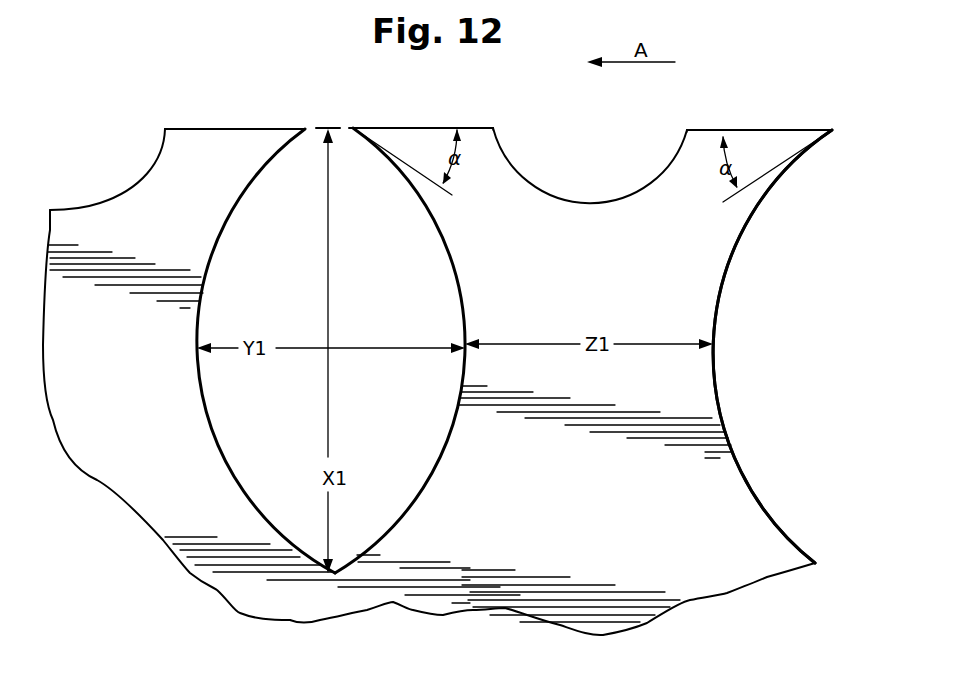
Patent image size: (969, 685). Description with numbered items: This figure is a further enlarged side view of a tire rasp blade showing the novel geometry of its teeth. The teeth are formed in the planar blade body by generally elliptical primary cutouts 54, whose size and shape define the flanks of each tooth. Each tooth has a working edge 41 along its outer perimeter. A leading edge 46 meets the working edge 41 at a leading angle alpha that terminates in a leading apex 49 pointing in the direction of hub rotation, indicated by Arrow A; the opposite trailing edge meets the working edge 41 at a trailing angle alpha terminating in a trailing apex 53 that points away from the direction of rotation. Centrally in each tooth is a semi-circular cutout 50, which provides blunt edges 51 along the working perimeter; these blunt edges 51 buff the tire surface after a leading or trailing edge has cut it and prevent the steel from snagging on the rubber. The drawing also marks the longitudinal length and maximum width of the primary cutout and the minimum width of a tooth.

The working edge 41 is at (218, 128).
The leading edge 46 is at (392, 163).
The leading apex 49 is at (353, 128).
The cutout 50 is at (624, 196).
The blunt edges 51 is at (508, 153).
The trailing apex 53 is at (833, 129).
The primary cutouts 54 is at (290, 412).